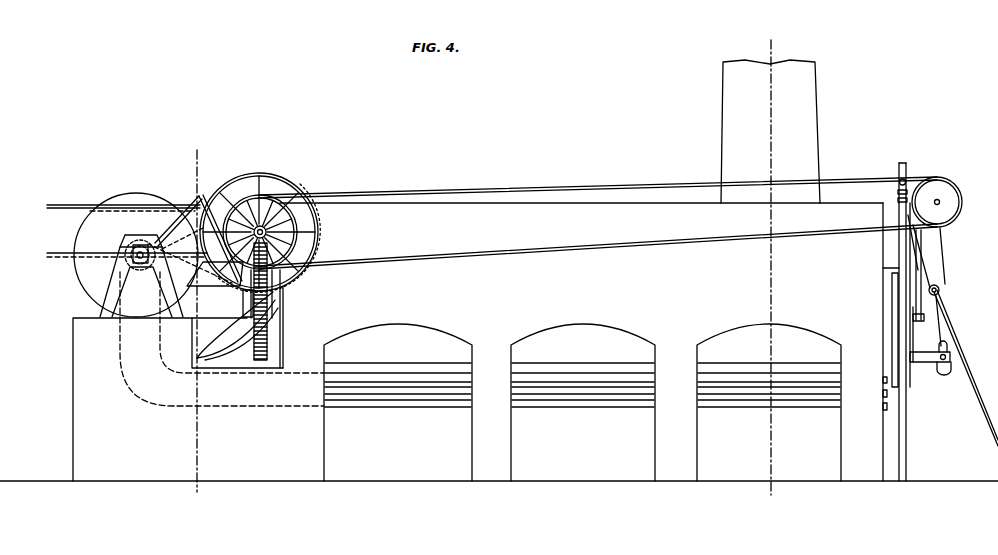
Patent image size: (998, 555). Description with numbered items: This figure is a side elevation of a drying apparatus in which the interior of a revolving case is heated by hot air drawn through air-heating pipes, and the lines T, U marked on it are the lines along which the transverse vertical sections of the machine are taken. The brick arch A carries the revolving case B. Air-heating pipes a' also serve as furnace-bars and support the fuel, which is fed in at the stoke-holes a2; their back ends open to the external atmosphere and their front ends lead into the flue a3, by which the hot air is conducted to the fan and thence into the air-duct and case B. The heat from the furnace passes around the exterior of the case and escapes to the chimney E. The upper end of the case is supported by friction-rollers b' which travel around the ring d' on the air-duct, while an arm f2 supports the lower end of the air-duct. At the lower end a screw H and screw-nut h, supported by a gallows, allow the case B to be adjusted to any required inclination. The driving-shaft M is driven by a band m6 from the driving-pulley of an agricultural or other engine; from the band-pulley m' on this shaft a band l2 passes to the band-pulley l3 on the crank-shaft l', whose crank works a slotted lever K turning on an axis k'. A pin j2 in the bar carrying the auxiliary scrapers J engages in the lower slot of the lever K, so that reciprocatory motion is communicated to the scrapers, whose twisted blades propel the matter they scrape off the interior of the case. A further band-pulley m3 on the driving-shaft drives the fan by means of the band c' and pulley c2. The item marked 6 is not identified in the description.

The section line U is at (203, 315).
The section line T is at (770, 258).
The band m6 is at (122, 205).
The pulley c2 is at (127, 255).
The band c' is at (195, 238).
The band-pulley m3 is at (259, 227).
The band-pulley m' is at (271, 232).
The driving-shaft M is at (320, 242).
The ring d' is at (250, 301).
The friction-rollers b' is at (237, 326).
The brick arch A is at (486, 342).
The flue a3 is at (222, 339).
The stoke-holes a2 is at (582, 402).
The revolving case B is at (577, 338).
The air-heating pipes a' is at (582, 385).
The chimney E is at (770, 131).
The band l2 is at (598, 220).
The crank-shaft l' is at (944, 202).
The band-pulley l3 is at (930, 203).
The screw H is at (909, 315).
The screw-nut h is at (896, 191).
The slotted lever K is at (926, 251).
The axis k' is at (945, 287).
The pin j2 is at (966, 368).
The arm f2 is at (919, 296).
The auxiliary scrapers J is at (930, 335).
The lugs 6 is at (896, 398).